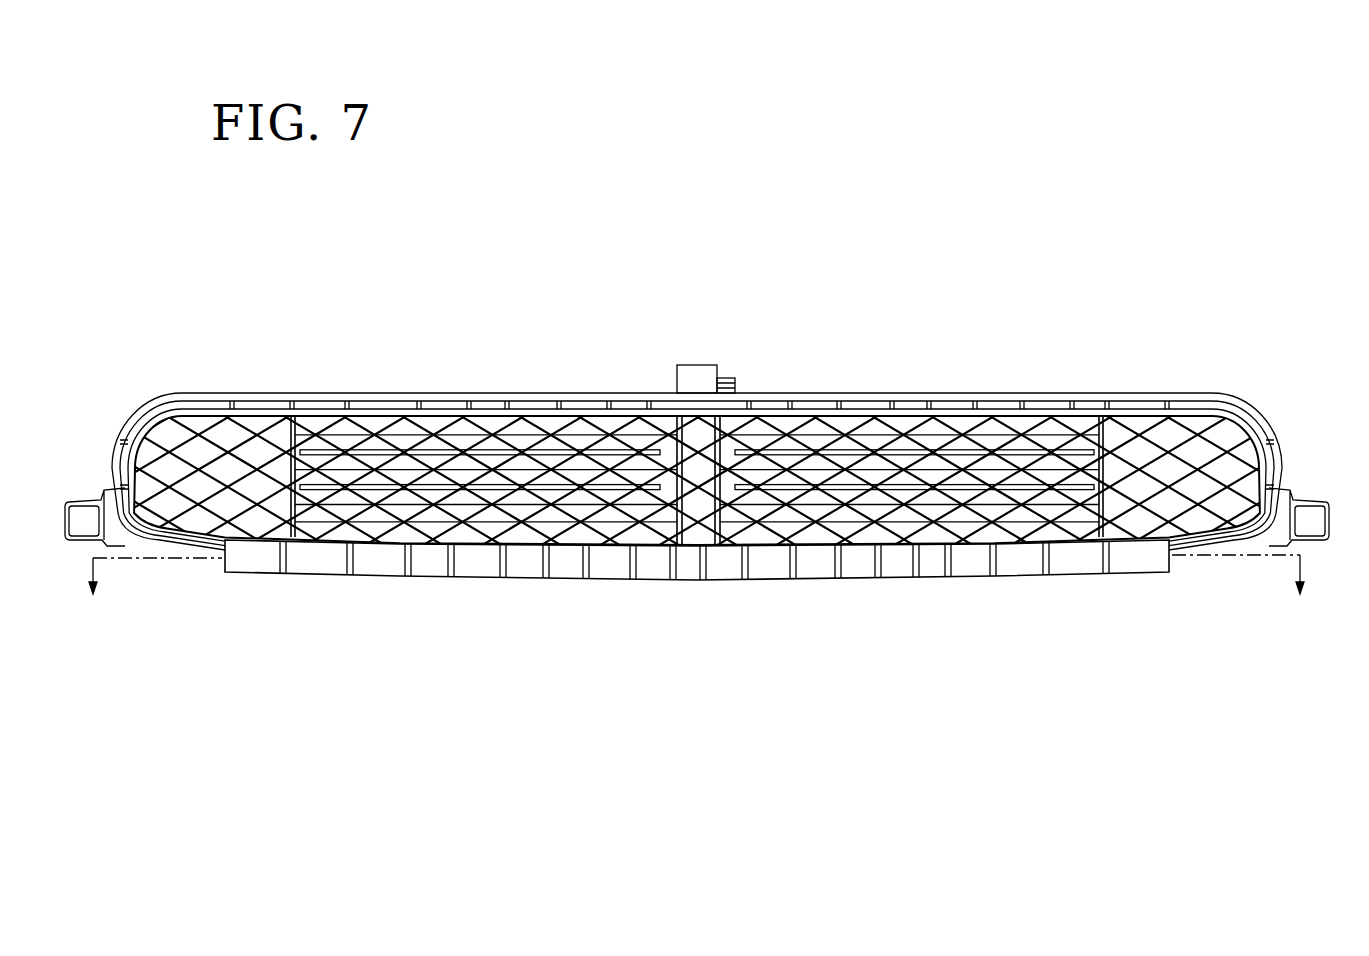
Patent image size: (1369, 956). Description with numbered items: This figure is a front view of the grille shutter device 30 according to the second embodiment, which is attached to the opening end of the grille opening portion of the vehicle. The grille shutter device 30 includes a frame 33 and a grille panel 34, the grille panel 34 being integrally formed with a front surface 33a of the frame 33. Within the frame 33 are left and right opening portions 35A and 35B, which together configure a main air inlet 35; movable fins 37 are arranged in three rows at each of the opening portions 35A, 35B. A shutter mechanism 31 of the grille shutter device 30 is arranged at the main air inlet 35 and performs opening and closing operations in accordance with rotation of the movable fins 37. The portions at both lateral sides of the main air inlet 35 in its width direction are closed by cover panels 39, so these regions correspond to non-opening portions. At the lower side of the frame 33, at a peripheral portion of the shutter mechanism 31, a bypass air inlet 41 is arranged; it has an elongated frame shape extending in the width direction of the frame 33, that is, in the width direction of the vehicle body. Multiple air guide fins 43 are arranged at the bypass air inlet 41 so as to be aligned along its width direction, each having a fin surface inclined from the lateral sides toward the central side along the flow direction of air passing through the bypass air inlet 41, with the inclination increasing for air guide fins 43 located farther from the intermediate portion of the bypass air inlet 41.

The grille shutter device 30 is at (190, 296).
The shutter mechanism 31 is at (698, 524).
The frame 33 is at (726, 447).
The front surface 33a is at (1273, 417).
The grille panel 34 is at (1224, 433).
The main air inlet 35 is at (698, 483).
The opening portion 35A is at (842, 412).
The opening portion 35B is at (435, 412).
The movable fins 37 is at (372, 487).
The cover panels 39 is at (243, 424).
The bypass air inlet 41 is at (697, 598).
The air guide fins 43 is at (265, 563).